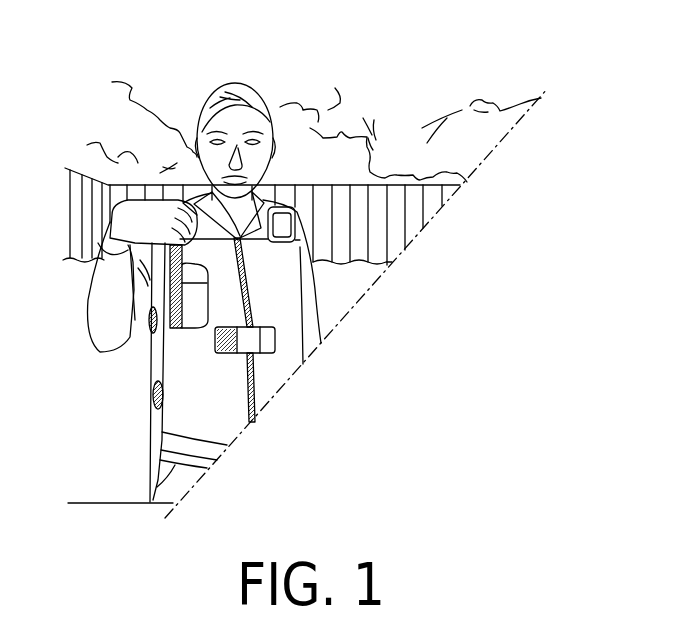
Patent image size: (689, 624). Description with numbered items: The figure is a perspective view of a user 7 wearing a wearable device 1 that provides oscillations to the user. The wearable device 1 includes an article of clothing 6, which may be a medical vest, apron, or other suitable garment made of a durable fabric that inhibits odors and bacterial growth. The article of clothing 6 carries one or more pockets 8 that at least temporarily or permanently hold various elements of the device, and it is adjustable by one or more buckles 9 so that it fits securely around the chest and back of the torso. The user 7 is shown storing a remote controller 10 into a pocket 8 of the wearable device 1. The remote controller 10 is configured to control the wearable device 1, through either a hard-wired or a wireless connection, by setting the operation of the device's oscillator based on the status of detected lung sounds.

The wearable device 1 is at (283, 200).
The article of clothing 6 is at (288, 286).
The user 7 is at (245, 82).
The pocket 8 is at (185, 316).
The buckle 9 is at (270, 340).
The remote controller 10 is at (186, 271).